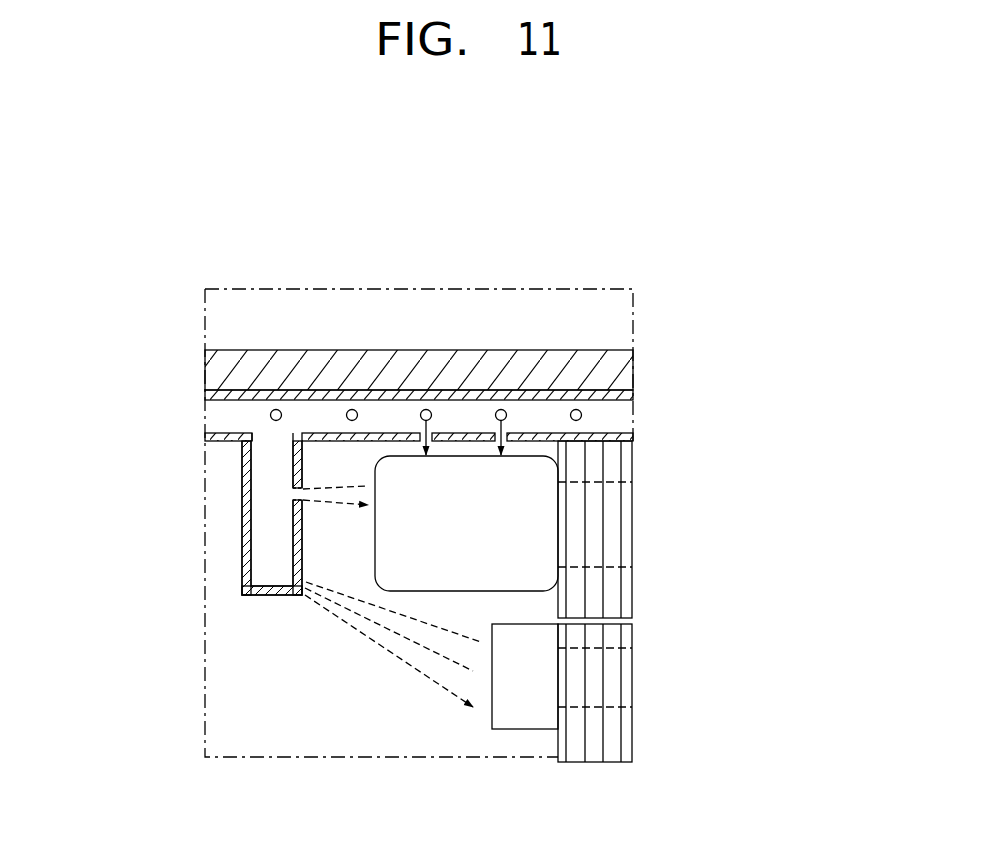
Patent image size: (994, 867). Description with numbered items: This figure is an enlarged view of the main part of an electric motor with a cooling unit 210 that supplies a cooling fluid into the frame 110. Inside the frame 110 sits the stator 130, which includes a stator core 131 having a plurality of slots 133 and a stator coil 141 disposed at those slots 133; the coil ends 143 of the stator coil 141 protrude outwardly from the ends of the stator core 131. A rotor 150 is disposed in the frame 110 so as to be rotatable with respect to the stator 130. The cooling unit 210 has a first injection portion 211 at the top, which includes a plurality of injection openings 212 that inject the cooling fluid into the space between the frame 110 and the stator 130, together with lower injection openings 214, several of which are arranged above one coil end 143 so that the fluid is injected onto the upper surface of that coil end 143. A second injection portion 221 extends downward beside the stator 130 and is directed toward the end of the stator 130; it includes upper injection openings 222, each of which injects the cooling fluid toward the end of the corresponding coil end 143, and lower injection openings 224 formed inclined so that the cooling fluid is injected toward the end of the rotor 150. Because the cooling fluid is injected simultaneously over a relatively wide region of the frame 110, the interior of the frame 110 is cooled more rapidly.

The frame 110 is at (576, 348).
The stator 130 is at (488, 514).
The stator core 131 is at (613, 453).
The slots 133 is at (632, 565).
The stator coil 141 is at (605, 482).
The coil ends 143 is at (533, 527).
The rotor 150 is at (555, 743).
The cooling unit 210 is at (346, 451).
The first injection portion 211 is at (373, 325).
The injection openings 212 is at (352, 409).
The lower injection openings 214 is at (501, 434).
The second injection portion 221 is at (270, 574).
The upper injection openings 222 is at (293, 493).
The lower injection openings 224 is at (293, 575).